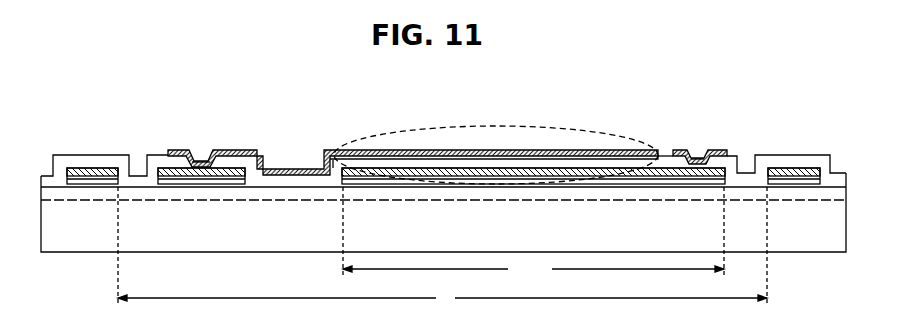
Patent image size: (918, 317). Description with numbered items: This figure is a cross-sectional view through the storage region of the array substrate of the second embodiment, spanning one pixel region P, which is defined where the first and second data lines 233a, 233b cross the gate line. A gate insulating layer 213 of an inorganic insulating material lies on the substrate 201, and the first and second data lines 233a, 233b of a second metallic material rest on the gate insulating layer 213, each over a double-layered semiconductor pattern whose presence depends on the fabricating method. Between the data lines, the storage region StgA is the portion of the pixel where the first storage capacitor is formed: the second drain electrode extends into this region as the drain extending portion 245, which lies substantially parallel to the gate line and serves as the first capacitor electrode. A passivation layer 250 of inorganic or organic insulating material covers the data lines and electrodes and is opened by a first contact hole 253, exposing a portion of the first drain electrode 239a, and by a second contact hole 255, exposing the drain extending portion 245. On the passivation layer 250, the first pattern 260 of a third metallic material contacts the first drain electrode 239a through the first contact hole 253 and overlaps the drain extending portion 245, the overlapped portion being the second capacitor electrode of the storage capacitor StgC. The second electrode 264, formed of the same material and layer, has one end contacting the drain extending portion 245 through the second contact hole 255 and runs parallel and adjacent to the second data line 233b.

The substrate 201 is at (821, 247).
The gate insulating layer 213 is at (362, 196).
The first data line 233a is at (92, 181).
The second data line 233b is at (797, 181).
The first drain electrode 239a is at (201, 181).
The drain extending portion 245 is at (520, 167).
The passivation layer 250 is at (592, 157).
The first contact hole 253 is at (204, 152).
The second contact hole 255 is at (700, 149).
The first pattern 260 is at (458, 150).
The second electrode 264 is at (723, 152).
The storage region StgA is at (533, 231).
The storage capacitor StgC is at (493, 126).
The pixel region P is at (442, 246).